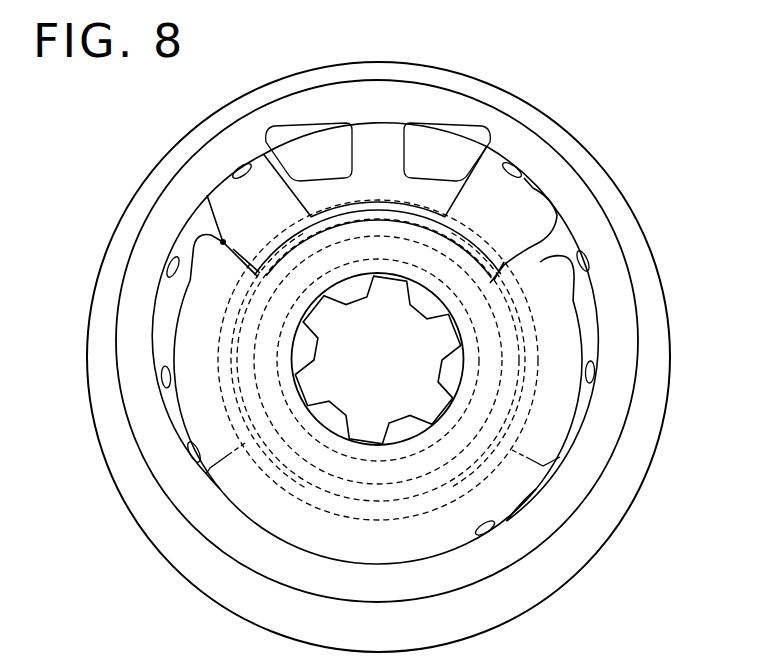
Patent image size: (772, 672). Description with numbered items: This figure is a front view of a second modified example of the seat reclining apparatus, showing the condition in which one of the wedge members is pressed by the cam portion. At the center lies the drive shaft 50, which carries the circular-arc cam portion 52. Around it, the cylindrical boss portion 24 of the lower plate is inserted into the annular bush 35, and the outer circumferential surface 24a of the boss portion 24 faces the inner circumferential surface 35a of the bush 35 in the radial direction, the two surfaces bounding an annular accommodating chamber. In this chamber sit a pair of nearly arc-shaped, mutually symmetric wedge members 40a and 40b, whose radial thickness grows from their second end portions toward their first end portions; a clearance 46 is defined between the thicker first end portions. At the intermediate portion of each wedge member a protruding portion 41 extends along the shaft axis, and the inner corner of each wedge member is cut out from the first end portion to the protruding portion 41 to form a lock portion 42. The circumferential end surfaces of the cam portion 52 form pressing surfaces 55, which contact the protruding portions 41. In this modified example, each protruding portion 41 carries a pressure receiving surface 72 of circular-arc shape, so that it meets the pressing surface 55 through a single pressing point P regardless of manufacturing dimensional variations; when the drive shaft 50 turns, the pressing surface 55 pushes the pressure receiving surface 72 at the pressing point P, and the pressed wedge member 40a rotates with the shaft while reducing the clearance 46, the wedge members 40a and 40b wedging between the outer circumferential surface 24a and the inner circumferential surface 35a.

The bush 35 is at (383, 592).
The inner circumferential surface of the bush 35a is at (487, 556).
The boss portion 24 is at (322, 493).
The outer circumferential surface of the boss portion 24a is at (437, 493).
The drive shaft 50 is at (395, 372).
The clearance 46 is at (378, 142).
The lock portion 42 is at (297, 183).
The wedge member 40a is at (163, 322).
The wedge member 40b is at (592, 313).
The cam portion 52 is at (160, 282).
The pressing surface 55 is at (238, 258).
The protruding portion 41 is at (210, 196).
The pressure receiving surface 72 is at (207, 222).
The pressing point P is at (223, 242).